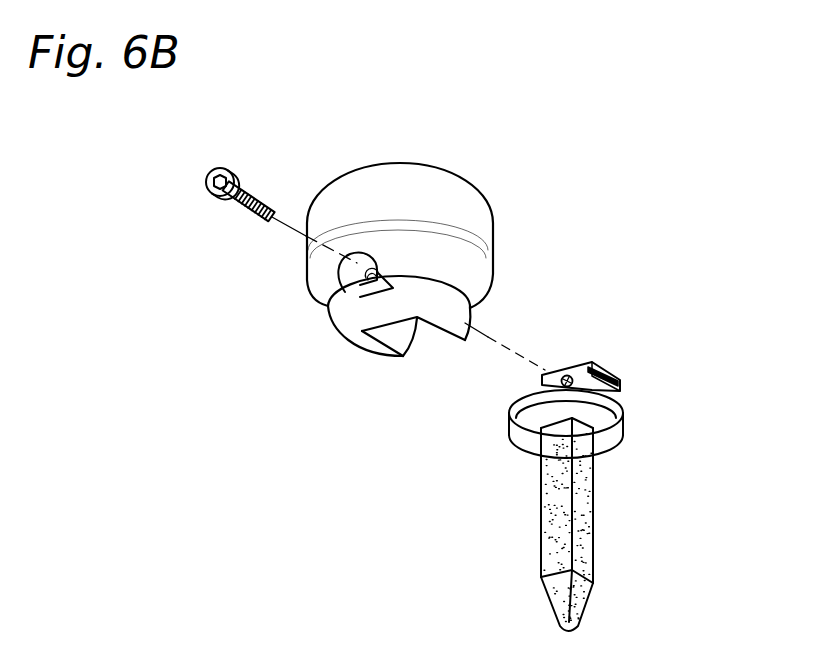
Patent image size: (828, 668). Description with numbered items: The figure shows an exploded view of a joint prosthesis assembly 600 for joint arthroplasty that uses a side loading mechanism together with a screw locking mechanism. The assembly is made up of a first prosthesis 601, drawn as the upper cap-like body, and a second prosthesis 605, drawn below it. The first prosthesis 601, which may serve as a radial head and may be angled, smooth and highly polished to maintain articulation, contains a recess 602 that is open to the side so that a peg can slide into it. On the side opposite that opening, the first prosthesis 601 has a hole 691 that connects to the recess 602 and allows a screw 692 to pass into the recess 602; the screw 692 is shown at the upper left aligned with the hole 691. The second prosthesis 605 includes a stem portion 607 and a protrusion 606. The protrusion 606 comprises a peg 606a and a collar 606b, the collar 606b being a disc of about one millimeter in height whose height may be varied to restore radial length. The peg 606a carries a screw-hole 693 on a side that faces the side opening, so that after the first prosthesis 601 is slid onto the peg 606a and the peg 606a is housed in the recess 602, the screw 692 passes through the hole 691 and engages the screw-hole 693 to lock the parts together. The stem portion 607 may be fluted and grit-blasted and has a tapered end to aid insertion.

The joint prosthesis assembly 600 is at (584, 225).
The first prosthesis 601 is at (478, 178).
The recess 602 is at (387, 352).
The second prosthesis 605 is at (608, 540).
The protrusion 606 is at (623, 440).
The peg 606a is at (607, 372).
The collar 606b is at (510, 438).
The stem portion 607 is at (551, 522).
The hole 691 is at (333, 327).
The screw 692 is at (212, 208).
The screw-hole 693 is at (567, 378).